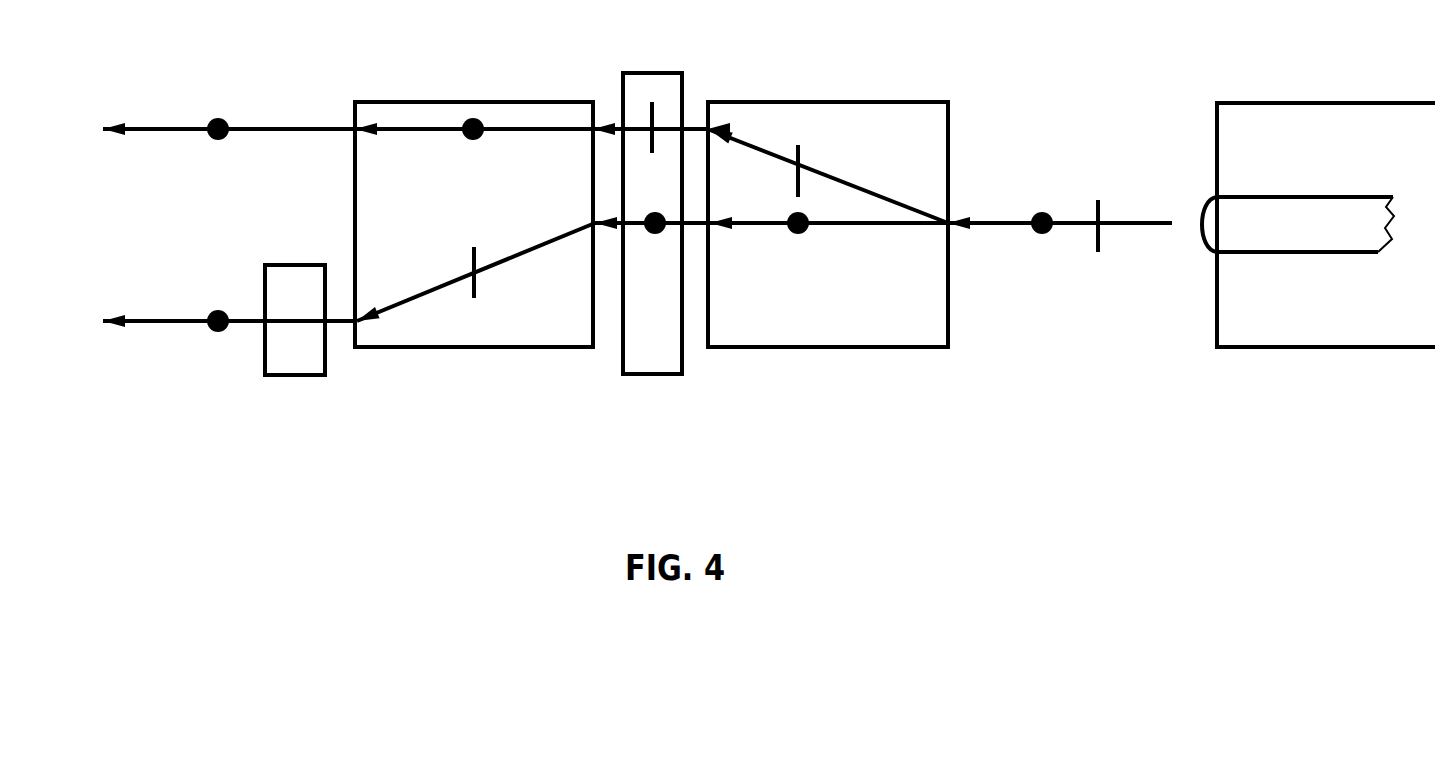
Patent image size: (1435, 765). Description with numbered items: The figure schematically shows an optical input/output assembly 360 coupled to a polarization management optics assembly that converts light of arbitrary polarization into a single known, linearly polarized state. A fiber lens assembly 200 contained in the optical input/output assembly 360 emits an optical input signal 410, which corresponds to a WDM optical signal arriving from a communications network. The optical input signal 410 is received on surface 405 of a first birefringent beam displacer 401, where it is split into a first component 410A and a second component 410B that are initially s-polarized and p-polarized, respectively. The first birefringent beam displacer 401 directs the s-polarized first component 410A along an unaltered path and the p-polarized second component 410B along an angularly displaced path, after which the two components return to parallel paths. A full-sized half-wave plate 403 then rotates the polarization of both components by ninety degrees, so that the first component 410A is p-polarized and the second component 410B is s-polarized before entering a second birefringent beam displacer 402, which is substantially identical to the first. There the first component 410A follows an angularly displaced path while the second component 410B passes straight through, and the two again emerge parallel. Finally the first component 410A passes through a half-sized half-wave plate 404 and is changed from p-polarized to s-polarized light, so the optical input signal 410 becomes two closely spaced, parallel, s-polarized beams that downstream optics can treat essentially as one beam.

The fiber lens assembly 200 is at (1282, 197).
The optical input/output assembly 360 is at (1262, 347).
The first birefringent beam displacer 401 is at (843, 347).
The second birefringent beam displacer 402 is at (487, 347).
The full-sized half-wave plate 403 is at (649, 374).
The half-sized half-wave plate 404 is at (298, 375).
The surface 405 is at (947, 327).
The optical input signal 410 is at (1071, 222).
The first component 410A is at (182, 323).
The second component 410B is at (181, 129).